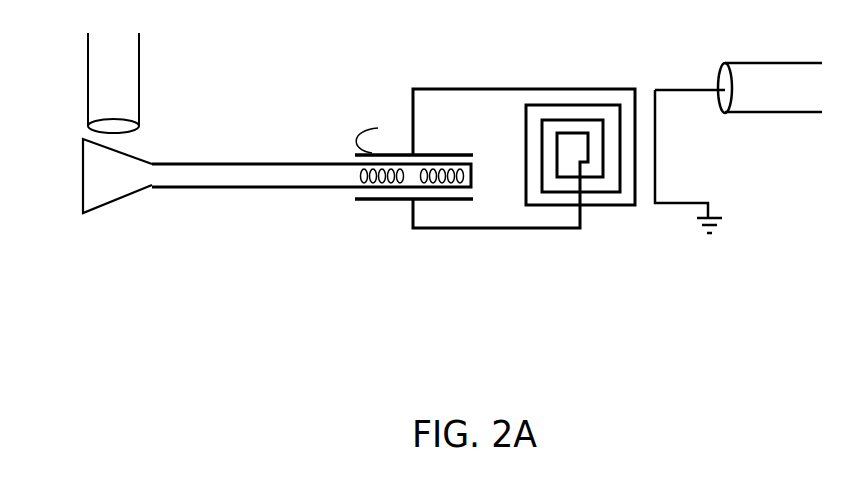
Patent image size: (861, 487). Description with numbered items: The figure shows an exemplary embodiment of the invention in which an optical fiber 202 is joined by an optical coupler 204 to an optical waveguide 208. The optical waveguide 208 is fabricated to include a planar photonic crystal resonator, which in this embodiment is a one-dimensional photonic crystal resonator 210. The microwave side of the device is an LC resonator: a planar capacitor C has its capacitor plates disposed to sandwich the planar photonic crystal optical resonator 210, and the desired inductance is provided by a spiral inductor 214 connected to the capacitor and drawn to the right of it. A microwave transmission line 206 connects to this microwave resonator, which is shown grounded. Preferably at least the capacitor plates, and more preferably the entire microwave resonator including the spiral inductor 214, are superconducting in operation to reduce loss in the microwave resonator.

The optical fiber 202 is at (139, 67).
The optical coupler 204 is at (110, 187).
The microwave transmission line 206 is at (808, 88).
The optical waveguide 208 is at (247, 178).
The 1-D photonic crystal resonator 210 is at (340, 157).
The spiral inductor 214 is at (614, 224).